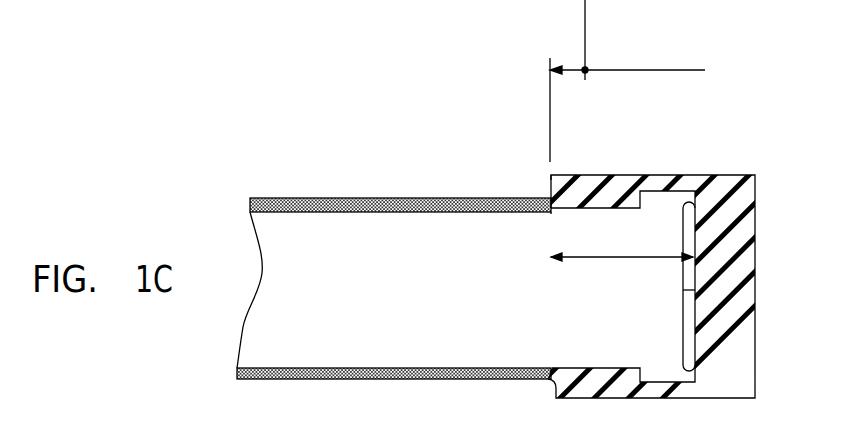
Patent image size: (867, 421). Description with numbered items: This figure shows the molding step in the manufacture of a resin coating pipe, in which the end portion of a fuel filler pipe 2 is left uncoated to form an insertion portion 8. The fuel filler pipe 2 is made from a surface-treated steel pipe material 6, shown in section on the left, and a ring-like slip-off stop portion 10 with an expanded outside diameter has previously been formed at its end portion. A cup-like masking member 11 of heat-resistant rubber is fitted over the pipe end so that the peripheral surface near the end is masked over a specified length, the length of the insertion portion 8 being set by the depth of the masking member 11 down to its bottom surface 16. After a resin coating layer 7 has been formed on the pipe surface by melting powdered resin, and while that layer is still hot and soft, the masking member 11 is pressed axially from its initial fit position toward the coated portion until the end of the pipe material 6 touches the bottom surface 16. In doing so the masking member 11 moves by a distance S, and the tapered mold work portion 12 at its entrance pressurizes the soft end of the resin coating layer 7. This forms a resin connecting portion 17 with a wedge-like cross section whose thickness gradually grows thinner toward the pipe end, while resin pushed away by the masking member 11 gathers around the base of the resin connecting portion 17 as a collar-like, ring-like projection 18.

The fuel filler pipe 2 is at (280, 189).
The pipe material 6 is at (355, 228).
The resin coating layer 7 is at (418, 198).
The insertion portion 8 is at (622, 269).
The slip-off stop portion 10 is at (695, 290).
The masking member 11 is at (702, 167).
The mold work portion 12 is at (550, 212).
The bottom surface 16 is at (688, 324).
The resin connecting portion 17 is at (552, 206).
The ring-like projection 18 is at (549, 196).
The distance S is at (627, 81).